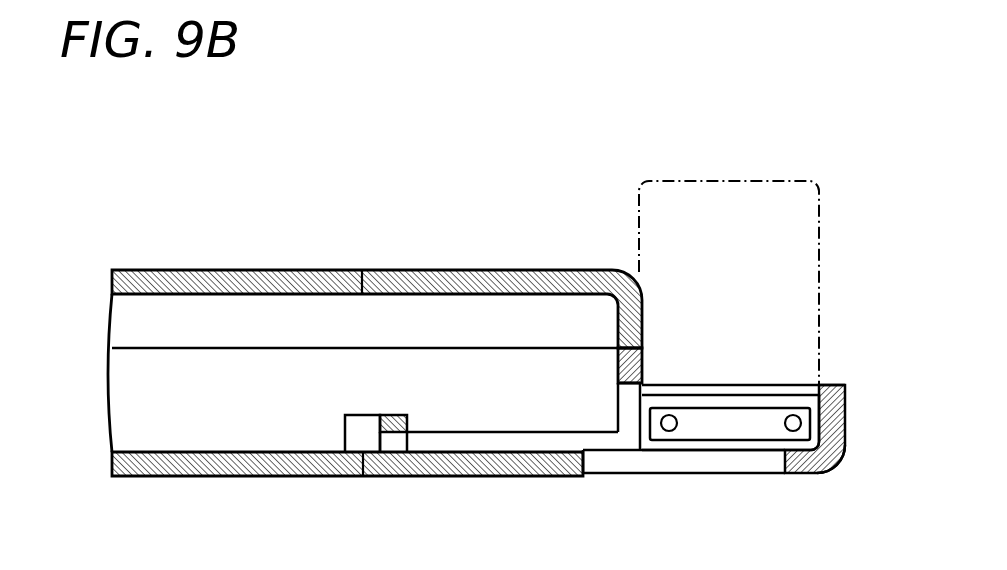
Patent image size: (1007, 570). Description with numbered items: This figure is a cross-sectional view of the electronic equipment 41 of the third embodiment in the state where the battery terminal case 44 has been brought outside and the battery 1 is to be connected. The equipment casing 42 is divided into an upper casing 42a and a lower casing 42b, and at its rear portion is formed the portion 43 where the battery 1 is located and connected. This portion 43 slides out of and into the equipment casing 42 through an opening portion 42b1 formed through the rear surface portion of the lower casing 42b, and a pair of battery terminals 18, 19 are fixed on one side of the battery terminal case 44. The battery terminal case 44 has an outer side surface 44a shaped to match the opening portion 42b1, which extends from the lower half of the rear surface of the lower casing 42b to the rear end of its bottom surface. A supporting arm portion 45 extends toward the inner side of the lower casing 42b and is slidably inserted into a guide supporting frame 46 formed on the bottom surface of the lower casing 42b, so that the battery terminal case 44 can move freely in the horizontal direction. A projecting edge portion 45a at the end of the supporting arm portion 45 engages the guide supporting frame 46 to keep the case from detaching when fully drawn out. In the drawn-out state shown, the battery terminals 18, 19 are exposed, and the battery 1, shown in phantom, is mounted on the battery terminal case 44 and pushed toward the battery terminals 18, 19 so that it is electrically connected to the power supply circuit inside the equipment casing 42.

The battery 1 is at (801, 178).
The battery terminal 18 is at (786, 432).
The battery terminal 19 is at (668, 432).
The electronic equipment 41 is at (514, 252).
The equipment casing 42 is at (410, 360).
The upper casing 42a is at (350, 268).
The lower casing 42b is at (288, 470).
The opening portion 42b1 is at (665, 374).
The portion where the battery is located and connected 43 is at (748, 364).
The battery terminal case 44 is at (750, 393).
The outer side surface 44a is at (832, 420).
The supporting arm portion 45 is at (508, 437).
The projecting edge portion 45a is at (360, 414).
The guide supporting frame 46 is at (393, 414).